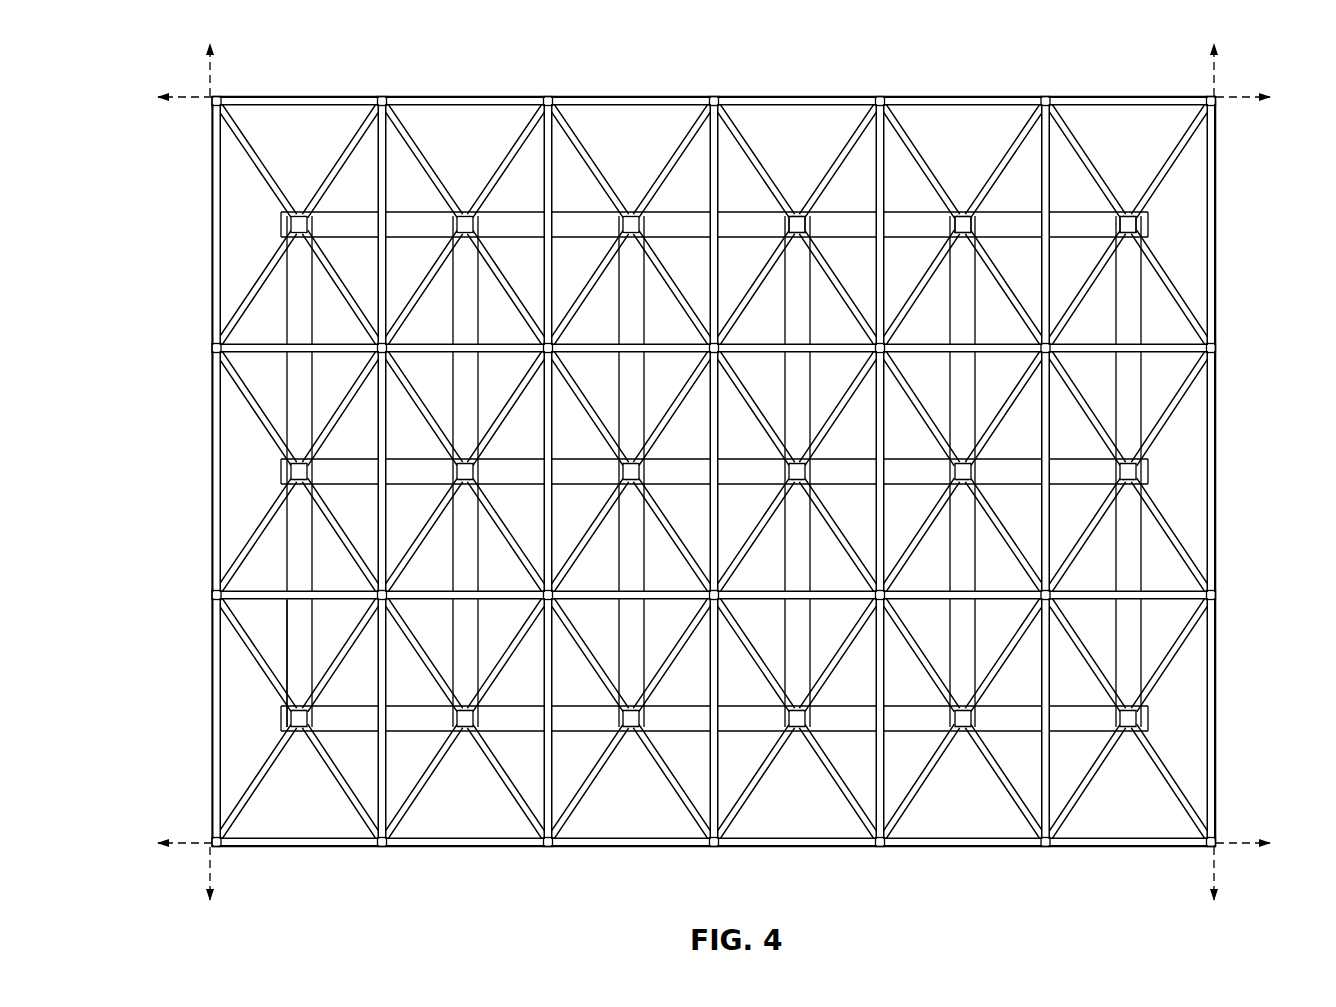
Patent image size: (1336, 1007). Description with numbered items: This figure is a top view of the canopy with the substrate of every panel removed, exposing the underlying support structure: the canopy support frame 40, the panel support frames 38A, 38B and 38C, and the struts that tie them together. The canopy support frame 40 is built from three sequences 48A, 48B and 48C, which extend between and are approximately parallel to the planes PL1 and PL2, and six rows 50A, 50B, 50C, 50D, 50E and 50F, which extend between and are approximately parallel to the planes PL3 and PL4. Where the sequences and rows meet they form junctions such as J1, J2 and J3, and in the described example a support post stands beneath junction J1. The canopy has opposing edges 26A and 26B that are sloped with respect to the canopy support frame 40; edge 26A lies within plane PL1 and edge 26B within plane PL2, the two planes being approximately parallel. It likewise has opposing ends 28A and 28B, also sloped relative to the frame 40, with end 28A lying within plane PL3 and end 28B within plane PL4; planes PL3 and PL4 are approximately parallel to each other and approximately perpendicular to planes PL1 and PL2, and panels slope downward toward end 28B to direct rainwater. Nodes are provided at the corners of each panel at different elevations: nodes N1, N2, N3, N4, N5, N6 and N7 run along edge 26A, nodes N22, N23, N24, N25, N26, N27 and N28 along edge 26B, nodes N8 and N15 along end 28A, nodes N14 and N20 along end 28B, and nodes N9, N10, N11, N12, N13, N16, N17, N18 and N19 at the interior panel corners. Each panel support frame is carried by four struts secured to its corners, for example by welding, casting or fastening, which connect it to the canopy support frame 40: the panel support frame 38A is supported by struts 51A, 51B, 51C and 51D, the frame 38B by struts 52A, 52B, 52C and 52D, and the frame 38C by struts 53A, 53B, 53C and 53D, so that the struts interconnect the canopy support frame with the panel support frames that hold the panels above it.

The node N1 is at (1210, 99).
The node N2 is at (1045, 97).
The node N3 is at (881, 97).
The node N4 is at (713, 97).
The node N5 is at (547, 97).
The node N6 is at (381, 97).
The node N7 is at (217, 97).
The node N8 is at (1217, 349).
The node N9 is at (1050, 336).
The node N10 is at (884, 340).
The node N11 is at (718, 340).
The node N12 is at (552, 340).
The node N13 is at (386, 340).
The node N14 is at (214, 349).
The node N15 is at (1217, 595).
The node N16 is at (884, 587).
The node N17 is at (718, 587).
The node N18 is at (552, 587).
The node N19 is at (386, 587).
The node N20 is at (214, 597).
The node N22 is at (1208, 848).
The node N23 is at (1047, 847).
The node N24 is at (881, 847).
The node N25 is at (715, 847).
The node N26 is at (549, 847).
The node N27 is at (383, 847).
The node N28 is at (217, 848).
The edge 26A is at (794, 90).
The edge 26B is at (630, 851).
The end 28A is at (1232, 478).
The end 28B is at (165, 440).
The panel support frame 38A is at (1218, 225).
The panel support frame 38B is at (1218, 432).
The panel support frame 38C is at (1218, 690).
The canopy support frame 40 is at (296, 625).
The sequence 48A is at (271, 221).
The sequence 48B is at (271, 471).
The sequence 48C is at (271, 720).
The row 50A is at (1127, 212).
The row 50B is at (962, 212).
The row 50C is at (796, 212).
The row 50D is at (630, 212).
The row 50E is at (464, 212).
The row 50F is at (298, 212).
The strut 51A is at (1166, 170).
The strut 51B is at (1180, 292).
The strut 51C is at (1081, 140).
The strut 51D is at (1098, 283).
The strut 52A is at (1194, 382).
The strut 52B is at (1180, 545).
The strut 52C is at (1080, 402).
The strut 52D is at (1099, 522).
The strut 53A is at (1194, 627).
The strut 53B is at (1180, 792).
The strut 53C is at (1080, 652).
The strut 53D is at (1098, 768).
The junction J1 is at (1118, 214).
The junction J2 is at (953, 214).
The junction J3 is at (787, 214).
The plane PL1 is at (1233, 102).
The plane PL2 is at (1240, 842).
The plane PL3 is at (1216, 74).
The plane PL4 is at (208, 76).